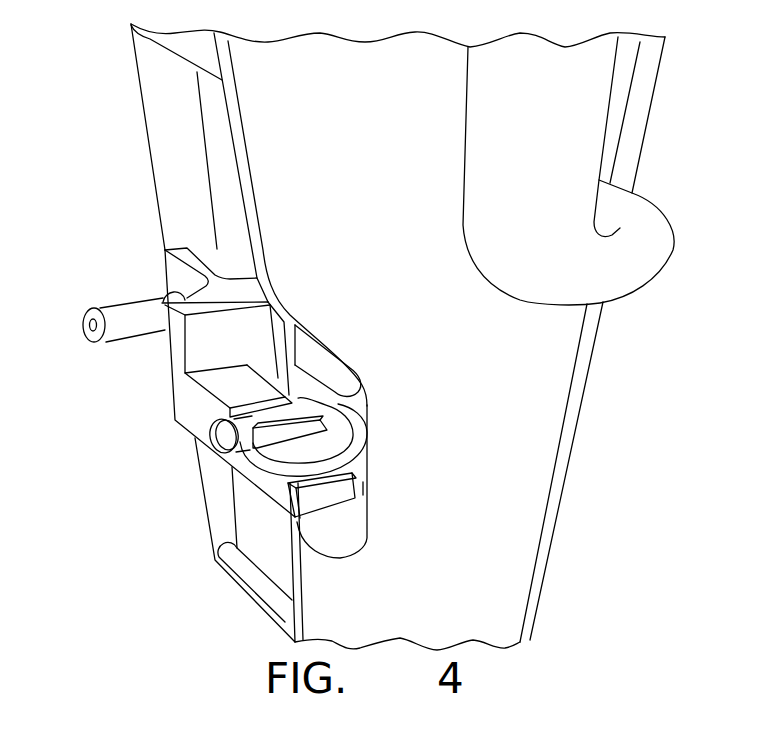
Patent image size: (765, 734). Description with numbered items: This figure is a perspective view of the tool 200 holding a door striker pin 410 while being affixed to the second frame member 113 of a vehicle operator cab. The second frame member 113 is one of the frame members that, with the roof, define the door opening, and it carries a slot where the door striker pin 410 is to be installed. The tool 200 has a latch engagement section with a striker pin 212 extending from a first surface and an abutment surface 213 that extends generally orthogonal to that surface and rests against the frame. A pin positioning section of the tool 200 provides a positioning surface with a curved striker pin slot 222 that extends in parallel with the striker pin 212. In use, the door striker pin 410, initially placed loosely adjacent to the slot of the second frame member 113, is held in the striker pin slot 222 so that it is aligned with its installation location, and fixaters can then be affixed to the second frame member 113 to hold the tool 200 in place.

The second frame member 113 is at (453, 440).
The tool 200 is at (163, 392).
The striker pin 212 is at (125, 315).
The abutment surface 213 is at (205, 350).
The striker pin slot 222 is at (243, 440).
The door striker pin 410 is at (312, 393).